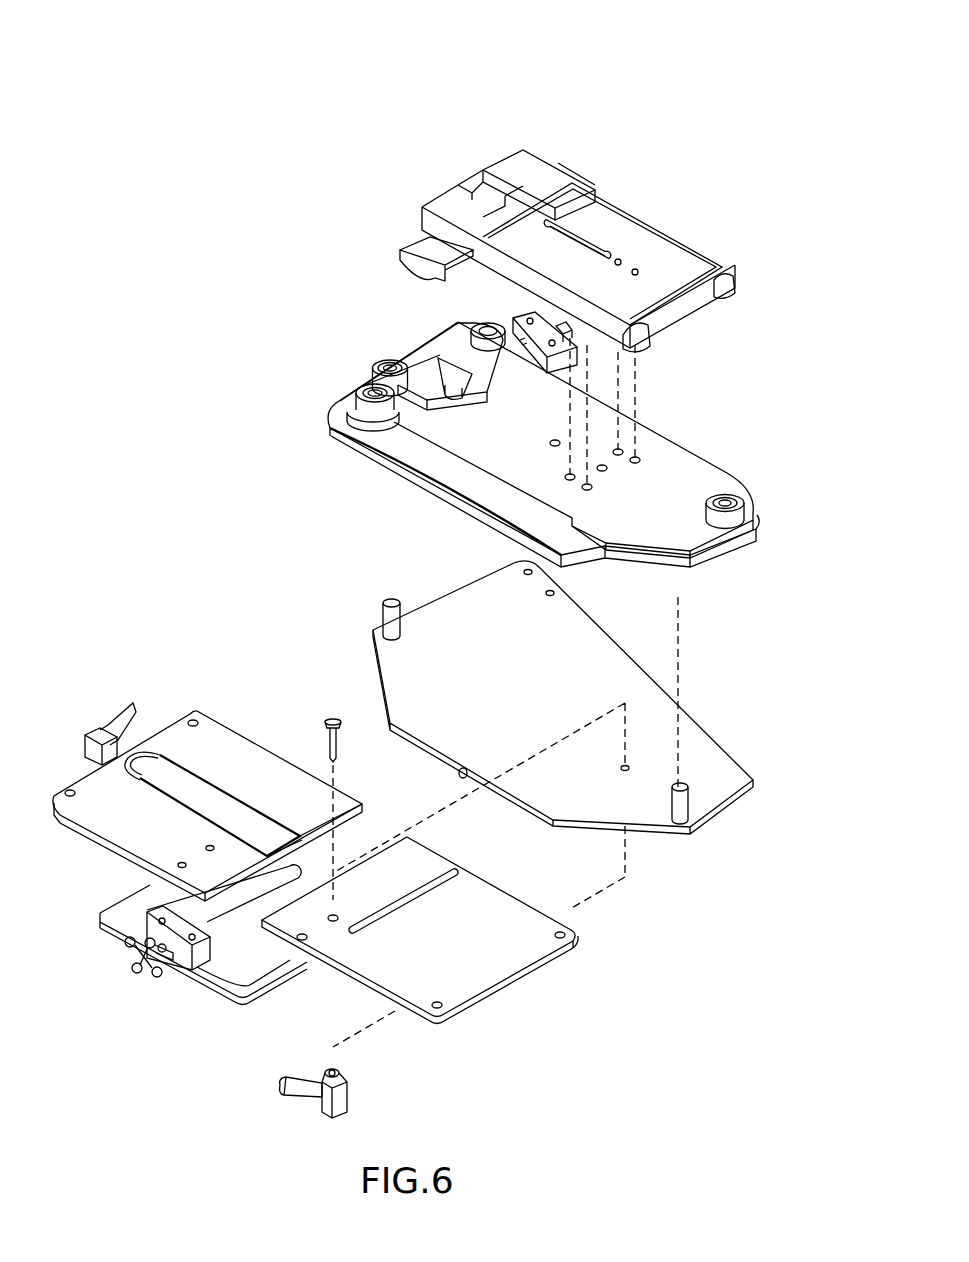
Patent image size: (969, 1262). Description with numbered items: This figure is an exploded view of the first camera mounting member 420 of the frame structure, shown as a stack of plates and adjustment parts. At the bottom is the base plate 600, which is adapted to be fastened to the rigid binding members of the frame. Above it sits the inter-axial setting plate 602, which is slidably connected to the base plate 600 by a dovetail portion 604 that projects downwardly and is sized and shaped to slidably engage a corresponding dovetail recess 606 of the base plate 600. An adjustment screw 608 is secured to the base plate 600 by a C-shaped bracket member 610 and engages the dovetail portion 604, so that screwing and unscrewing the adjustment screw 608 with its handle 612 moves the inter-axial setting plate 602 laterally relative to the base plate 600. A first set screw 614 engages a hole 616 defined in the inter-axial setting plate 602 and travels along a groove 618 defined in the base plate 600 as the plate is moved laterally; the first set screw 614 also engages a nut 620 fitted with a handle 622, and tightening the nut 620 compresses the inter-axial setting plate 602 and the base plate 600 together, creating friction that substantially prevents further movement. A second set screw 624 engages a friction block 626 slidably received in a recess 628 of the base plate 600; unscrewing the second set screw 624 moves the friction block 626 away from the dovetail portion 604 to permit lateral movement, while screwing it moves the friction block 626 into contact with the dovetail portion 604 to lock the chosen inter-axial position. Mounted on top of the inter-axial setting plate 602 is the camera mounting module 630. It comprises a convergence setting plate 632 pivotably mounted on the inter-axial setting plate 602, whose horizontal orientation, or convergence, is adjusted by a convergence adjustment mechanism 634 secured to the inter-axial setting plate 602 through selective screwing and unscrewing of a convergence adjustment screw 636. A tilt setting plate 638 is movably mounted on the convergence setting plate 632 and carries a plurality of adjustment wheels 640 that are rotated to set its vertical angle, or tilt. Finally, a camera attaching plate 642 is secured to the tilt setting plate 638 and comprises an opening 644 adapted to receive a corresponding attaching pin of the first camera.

The first camera mounting member 420 is at (88, 109).
The base plate 600 is at (518, 1012).
The inter-axial setting plate 602 is at (345, 641).
The dovetail portion 604 is at (472, 777).
The dovetail recess 606 is at (325, 837).
The adjustment screw 608 is at (194, 918).
The C-shaped bracket member 610 is at (230, 975).
The handle 612 is at (140, 955).
The first set screw 614 is at (333, 714).
The hole 616 is at (626, 765).
The groove 618 is at (355, 933).
The nut 620 is at (342, 1082).
The handle 622 is at (300, 1092).
The second set screw 624 is at (97, 727).
The friction block 626 is at (157, 778).
The recess 628 is at (217, 782).
The camera mounting module 630 is at (227, 92).
The convergence setting plate 632 is at (719, 576).
The convergence adjustment mechanism 634 is at (516, 313).
The convergence adjustment screw 636 is at (560, 332).
The tilt setting plate 638 is at (708, 469).
The adjustment wheels 640 is at (338, 412).
The camera attaching plate 642 is at (502, 158).
The opening 644 is at (588, 232).